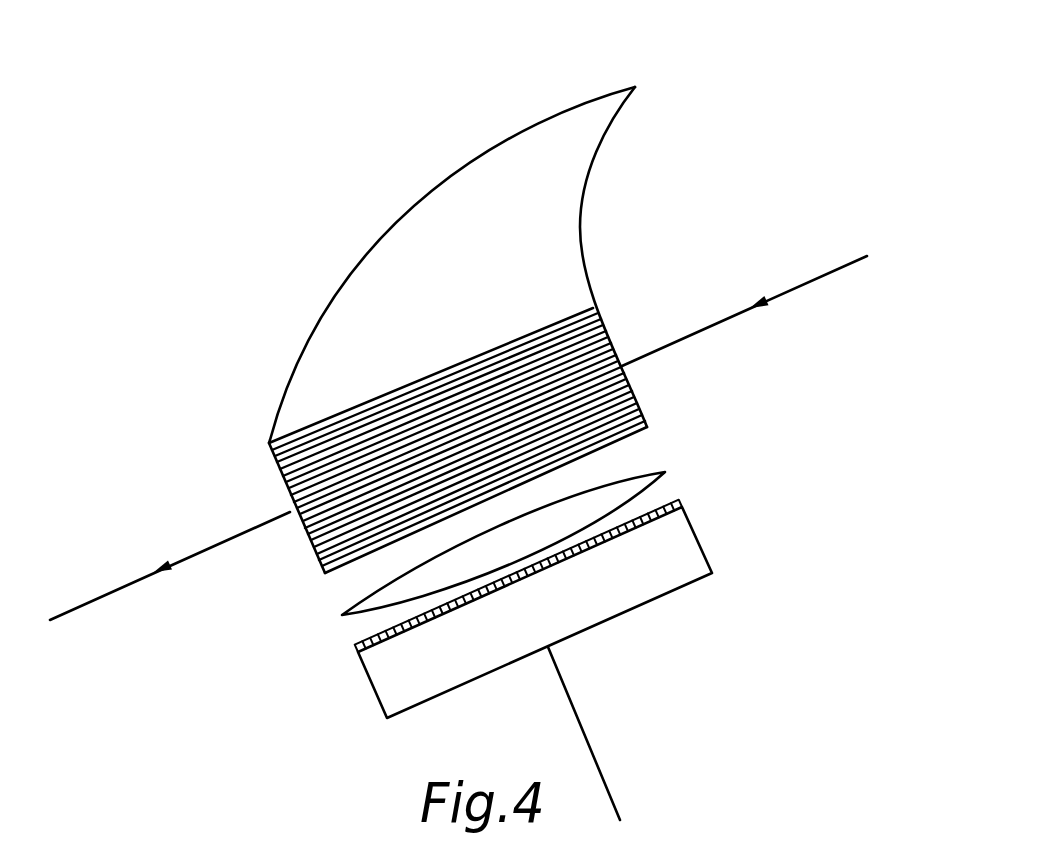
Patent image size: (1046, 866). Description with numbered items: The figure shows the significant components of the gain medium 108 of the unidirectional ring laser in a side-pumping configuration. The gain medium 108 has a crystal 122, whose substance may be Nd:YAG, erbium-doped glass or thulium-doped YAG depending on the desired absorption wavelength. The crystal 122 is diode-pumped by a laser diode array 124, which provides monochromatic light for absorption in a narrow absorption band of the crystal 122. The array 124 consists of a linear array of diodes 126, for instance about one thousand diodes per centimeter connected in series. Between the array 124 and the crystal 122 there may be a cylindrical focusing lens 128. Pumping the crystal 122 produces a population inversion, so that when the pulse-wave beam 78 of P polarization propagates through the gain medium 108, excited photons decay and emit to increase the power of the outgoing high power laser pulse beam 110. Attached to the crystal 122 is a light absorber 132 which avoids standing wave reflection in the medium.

The gain medium 108 is at (282, 261).
The light absorber 132 is at (588, 186).
The crystal 122 is at (645, 423).
The pulse-wave beam 78 is at (812, 283).
The high power laser pulse beam 110 is at (95, 600).
The cylindrical focusing lens 128 is at (665, 472).
The laser diode array 124 is at (705, 557).
The diodes 126 is at (358, 650).